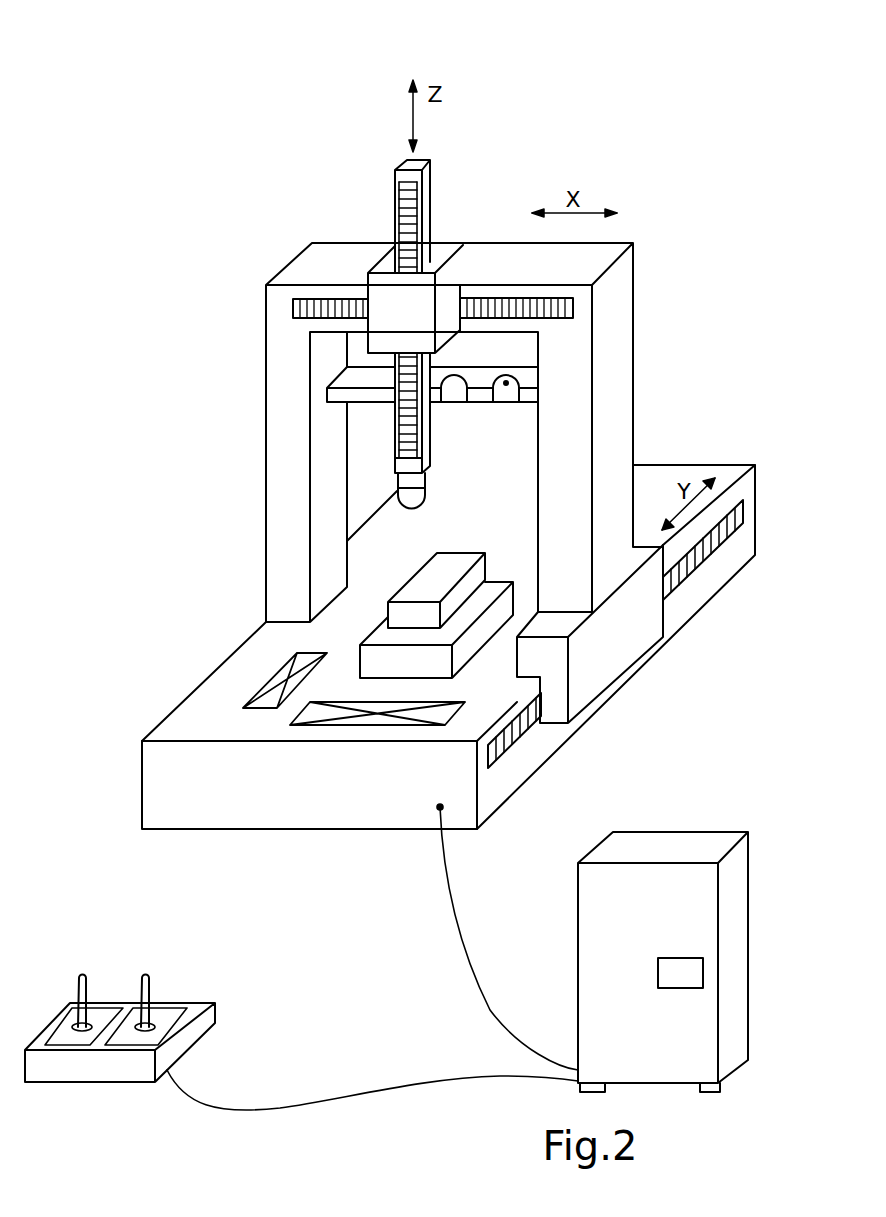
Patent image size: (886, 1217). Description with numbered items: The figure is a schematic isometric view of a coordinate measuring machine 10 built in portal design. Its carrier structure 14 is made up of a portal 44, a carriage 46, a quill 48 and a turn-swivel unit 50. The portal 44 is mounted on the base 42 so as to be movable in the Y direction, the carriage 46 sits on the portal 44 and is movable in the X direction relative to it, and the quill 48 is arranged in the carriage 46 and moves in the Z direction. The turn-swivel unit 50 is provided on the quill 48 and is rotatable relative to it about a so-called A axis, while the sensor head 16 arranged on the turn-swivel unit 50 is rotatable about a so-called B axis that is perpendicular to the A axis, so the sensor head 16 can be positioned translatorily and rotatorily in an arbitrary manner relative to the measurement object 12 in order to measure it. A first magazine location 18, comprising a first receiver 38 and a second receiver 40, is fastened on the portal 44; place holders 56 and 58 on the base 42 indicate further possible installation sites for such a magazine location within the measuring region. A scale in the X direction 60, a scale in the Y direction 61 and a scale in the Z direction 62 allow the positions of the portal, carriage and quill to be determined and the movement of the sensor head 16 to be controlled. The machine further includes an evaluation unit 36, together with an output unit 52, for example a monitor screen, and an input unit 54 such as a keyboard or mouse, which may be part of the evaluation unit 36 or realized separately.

The coordinate measuring machine 10 is at (245, 247).
The measurement object 12 is at (435, 585).
The carrier structure 14 is at (717, 53).
The sensor head 16 is at (412, 502).
The first magazine location 18 is at (537, 373).
The evaluation unit 36 is at (672, 848).
The first receiver 38 is at (452, 383).
The second receiver 40 is at (506, 383).
The base 42 is at (166, 785).
The portal 44 is at (280, 400).
The carriage 46 is at (387, 257).
The quill 48 is at (403, 162).
The turn-swivel unit 50 is at (405, 487).
The output unit 52 is at (687, 975).
The input unit 54 is at (214, 958).
The place holder 56 is at (275, 685).
The place holder 58 is at (375, 723).
The scale in the X direction 60 is at (567, 307).
The scale in the Y direction 61 is at (718, 545).
The scale in the Z direction 62 is at (409, 208).